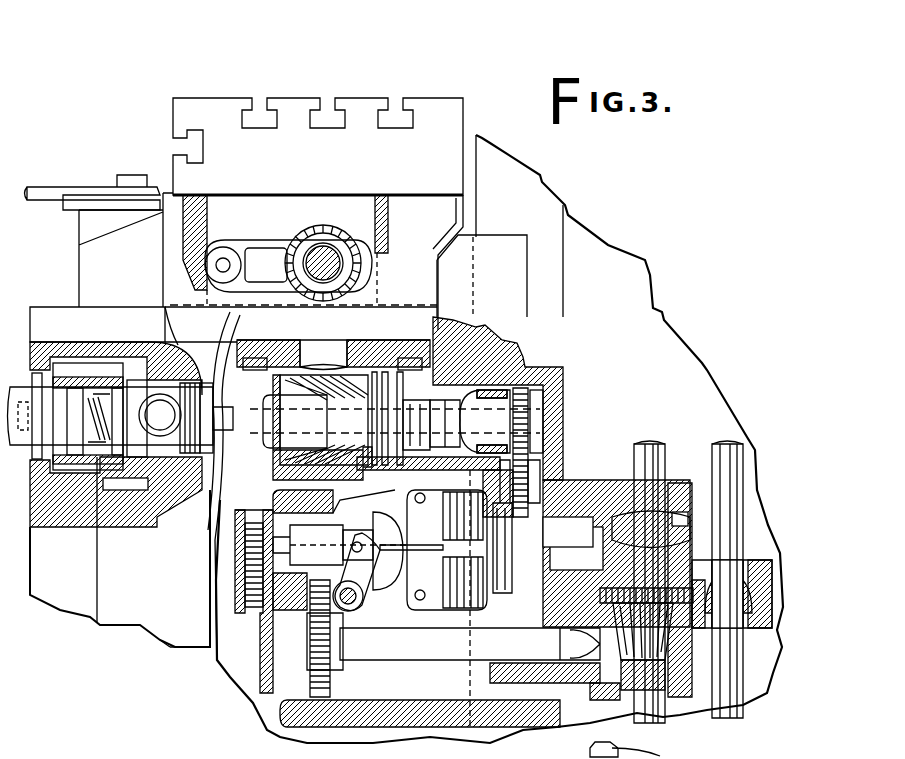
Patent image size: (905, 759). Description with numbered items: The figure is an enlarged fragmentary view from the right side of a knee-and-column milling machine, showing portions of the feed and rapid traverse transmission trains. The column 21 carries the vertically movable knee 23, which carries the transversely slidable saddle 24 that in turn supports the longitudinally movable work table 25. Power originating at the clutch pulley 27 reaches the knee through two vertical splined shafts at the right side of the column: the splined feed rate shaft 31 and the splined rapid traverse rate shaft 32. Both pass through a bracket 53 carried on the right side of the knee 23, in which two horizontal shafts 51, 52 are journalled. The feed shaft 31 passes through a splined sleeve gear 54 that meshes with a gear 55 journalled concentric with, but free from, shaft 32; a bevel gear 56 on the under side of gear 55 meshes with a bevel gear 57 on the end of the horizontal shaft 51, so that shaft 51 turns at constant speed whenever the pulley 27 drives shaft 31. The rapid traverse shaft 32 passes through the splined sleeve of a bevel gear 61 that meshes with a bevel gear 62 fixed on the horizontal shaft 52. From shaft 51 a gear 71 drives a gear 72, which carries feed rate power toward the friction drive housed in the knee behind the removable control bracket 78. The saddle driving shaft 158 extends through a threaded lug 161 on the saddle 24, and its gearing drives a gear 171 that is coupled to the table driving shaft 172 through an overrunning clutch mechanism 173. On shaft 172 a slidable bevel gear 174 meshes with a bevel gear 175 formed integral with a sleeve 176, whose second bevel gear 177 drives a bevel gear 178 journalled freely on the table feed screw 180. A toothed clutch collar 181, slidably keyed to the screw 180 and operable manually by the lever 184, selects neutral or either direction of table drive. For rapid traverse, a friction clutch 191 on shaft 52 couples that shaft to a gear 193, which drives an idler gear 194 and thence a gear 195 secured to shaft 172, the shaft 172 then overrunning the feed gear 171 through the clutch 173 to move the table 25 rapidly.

The column 21 is at (600, 265).
The knee 23 is at (175, 672).
The saddle 24 is at (84, 262).
The work table 25 is at (300, 100).
The clutch pulley 27 is at (195, 757).
The splined feed rate shaft 31 is at (725, 443).
The splined rapid traverse rate shaft 32 is at (650, 443).
The horizontal feed rate shaft 51 is at (485, 655).
The horizontal rapid traverse shaft 52 is at (300, 530).
The bracket 53 is at (560, 370).
The splined sleeve gear 54 is at (738, 562).
The gear 55 is at (625, 590).
The bevel gear 56 is at (695, 650).
The bevel gear 57 is at (580, 680).
The bevel gear 61 is at (675, 482).
The bevel gear 62 is at (560, 500).
The gear 71 is at (320, 675).
The gear 72 is at (325, 682).
The control bracket 78 is at (57, 602).
The saddle driving shaft 158 is at (600, 750).
The lug 161 is at (275, 482).
The gear 171 is at (62, 370).
The table driving shaft 172 is at (240, 350).
The overrunning clutch mechanism 173 is at (120, 373).
The bevel gear 174 is at (320, 412).
The bevel gear 175 is at (340, 372).
The sleeve 176 is at (365, 345).
The bevel gear 177 is at (290, 315).
The bevel gear 178 is at (345, 270).
The table feed screw 180 is at (345, 255).
The toothed clutch collar 181 is at (336, 250).
The lever 184 is at (50, 190).
The rapid traverse friction clutch 191 is at (433, 622).
The rapid traverse gear 193 is at (540, 470).
The idler gear 194 is at (535, 415).
The gear 195 is at (527, 385).